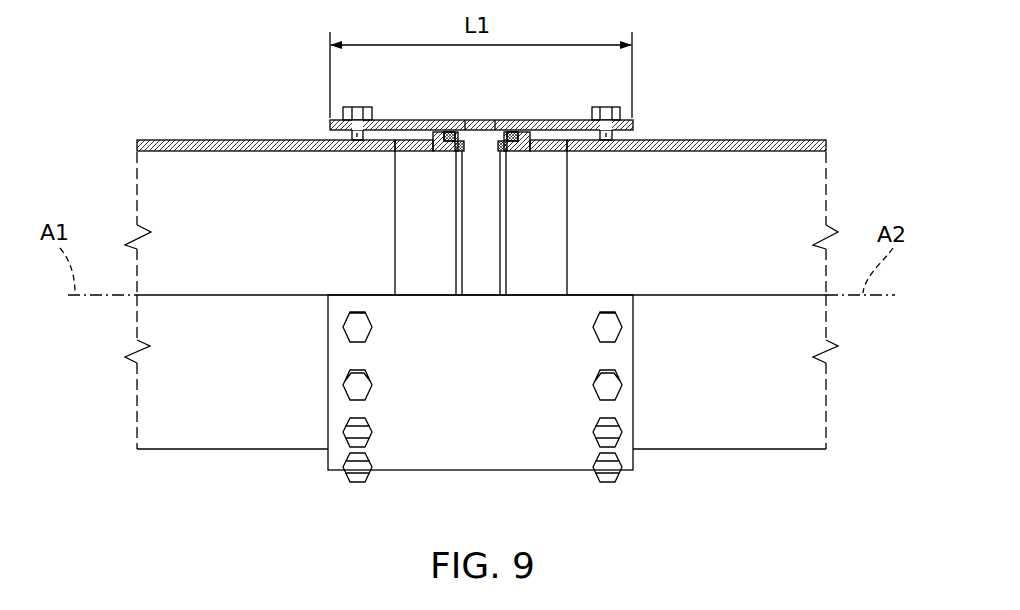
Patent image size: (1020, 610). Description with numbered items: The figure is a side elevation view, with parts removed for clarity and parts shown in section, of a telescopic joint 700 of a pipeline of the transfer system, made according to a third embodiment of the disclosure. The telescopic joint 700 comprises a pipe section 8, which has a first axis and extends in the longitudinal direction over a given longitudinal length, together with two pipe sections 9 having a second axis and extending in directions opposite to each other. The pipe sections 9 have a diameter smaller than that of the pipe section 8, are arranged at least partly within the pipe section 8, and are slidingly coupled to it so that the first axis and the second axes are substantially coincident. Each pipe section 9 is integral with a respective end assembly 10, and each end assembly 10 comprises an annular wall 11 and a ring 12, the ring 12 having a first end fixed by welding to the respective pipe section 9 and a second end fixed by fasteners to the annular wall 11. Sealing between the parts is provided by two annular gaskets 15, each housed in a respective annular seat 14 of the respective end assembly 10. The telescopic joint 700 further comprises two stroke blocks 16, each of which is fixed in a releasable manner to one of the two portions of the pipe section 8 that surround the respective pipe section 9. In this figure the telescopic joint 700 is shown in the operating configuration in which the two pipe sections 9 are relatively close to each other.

The telescopic joint 700 is at (182, 77).
The pipe section 9 is at (237, 140).
The pipe section 8 is at (483, 120).
The end assembly 10 is at (426, 162).
The annular wall 11 is at (465, 119).
The ring 12 is at (415, 152).
The annular seat 14 is at (459, 151).
The annular gasket 15 is at (440, 153).
The stroke block 16 is at (359, 100).